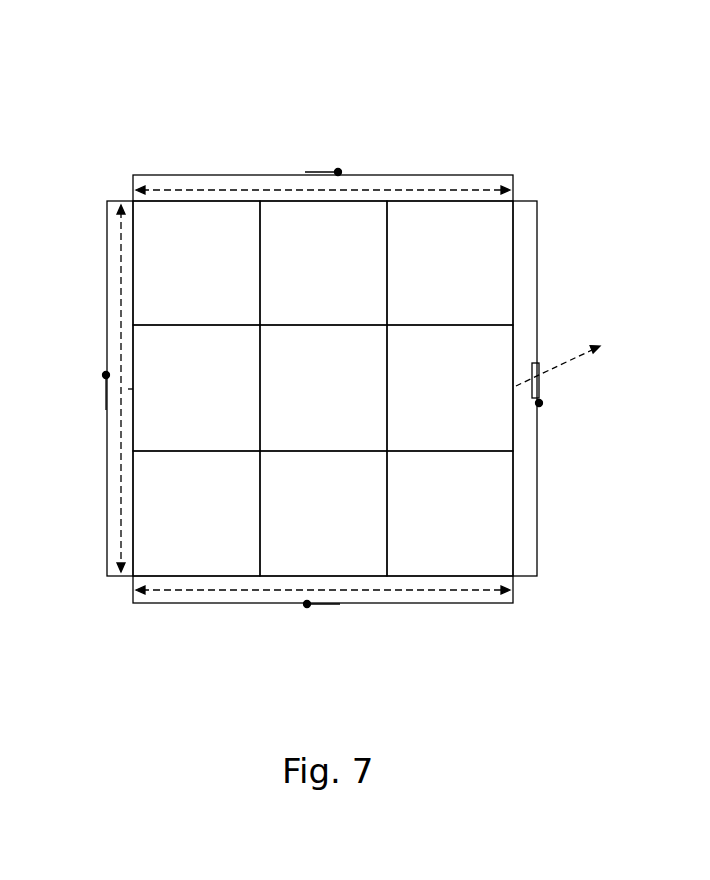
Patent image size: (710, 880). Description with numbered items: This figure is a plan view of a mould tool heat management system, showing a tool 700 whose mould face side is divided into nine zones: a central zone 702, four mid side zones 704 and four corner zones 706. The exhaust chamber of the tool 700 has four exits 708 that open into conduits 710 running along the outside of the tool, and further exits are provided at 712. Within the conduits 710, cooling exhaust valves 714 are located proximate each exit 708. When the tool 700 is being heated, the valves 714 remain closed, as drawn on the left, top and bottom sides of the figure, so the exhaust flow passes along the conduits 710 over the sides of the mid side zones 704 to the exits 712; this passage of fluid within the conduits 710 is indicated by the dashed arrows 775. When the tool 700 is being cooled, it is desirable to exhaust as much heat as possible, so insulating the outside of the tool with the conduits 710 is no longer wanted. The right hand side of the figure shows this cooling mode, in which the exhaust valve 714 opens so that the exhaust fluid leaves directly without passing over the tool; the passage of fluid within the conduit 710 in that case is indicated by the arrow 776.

The tool 700 is at (100, 175).
The central zone 702 is at (307, 406).
The mid side zones 704 is at (307, 284).
The corner zones 706 is at (176, 284).
The exits 708 is at (343, 187).
The conduits 710 is at (196, 603).
The exits 712 is at (552, 199).
The cooling exhaust valves 714 is at (559, 378).
The dashed arrows 775 is at (450, 189).
The arrow 776 is at (557, 364).